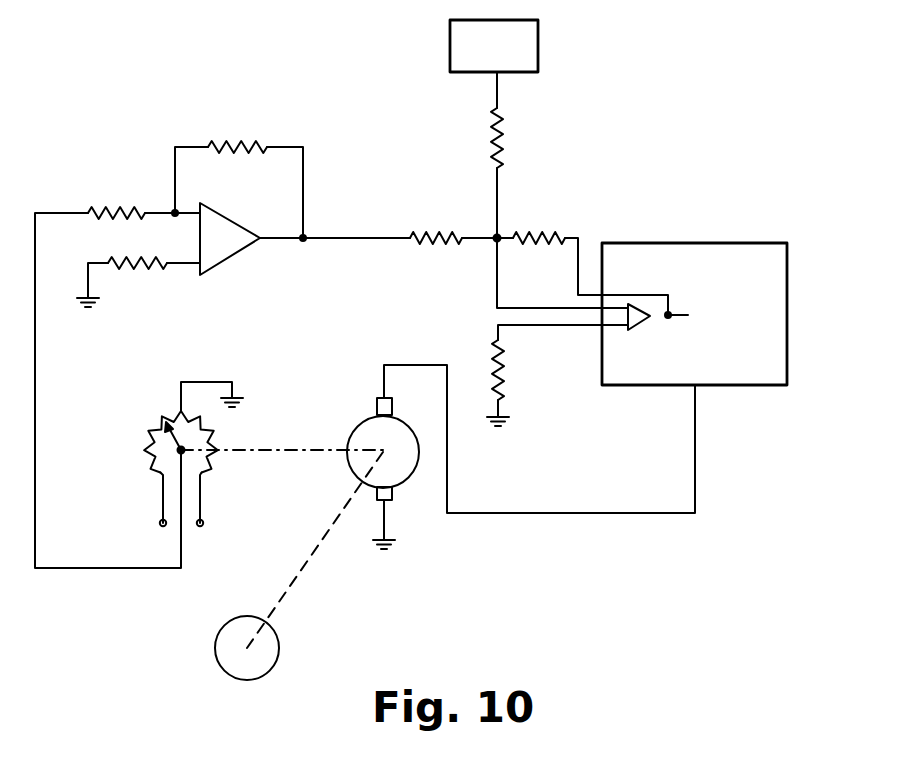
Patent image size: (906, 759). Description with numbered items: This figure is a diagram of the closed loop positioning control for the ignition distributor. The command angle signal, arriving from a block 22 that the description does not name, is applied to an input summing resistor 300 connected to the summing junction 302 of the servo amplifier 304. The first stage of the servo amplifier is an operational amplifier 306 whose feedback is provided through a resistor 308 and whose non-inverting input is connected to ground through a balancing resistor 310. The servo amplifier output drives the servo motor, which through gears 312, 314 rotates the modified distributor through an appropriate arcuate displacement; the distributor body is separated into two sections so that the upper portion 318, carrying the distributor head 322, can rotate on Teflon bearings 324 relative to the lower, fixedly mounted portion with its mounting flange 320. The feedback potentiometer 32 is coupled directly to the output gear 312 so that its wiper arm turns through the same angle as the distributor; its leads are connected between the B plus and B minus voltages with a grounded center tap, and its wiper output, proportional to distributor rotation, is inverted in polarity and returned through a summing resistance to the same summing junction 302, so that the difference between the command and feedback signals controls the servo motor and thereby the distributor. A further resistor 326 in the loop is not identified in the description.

The sensor / transducer unit 22 is at (538, 55).
The input summing resistor 300 is at (502, 132).
The summing junction 302 is at (500, 233).
The servo amplifier 304 is at (712, 243).
The first stage operational amplifier 306 is at (642, 322).
The feedback resistor 308 is at (552, 233).
The balancing resistor 310 is at (507, 373).
The output gear 312 is at (410, 478).
The gear 314 is at (278, 657).
The upper section of distributor 318 is at (168, 438).
The feedback potentiometer 32 is at (155, 443).
The mounting flange 320 is at (128, 207).
The distributor head 322 is at (235, 257).
The Teflon bearings 324 is at (240, 141).
The resistor 326 is at (452, 202).